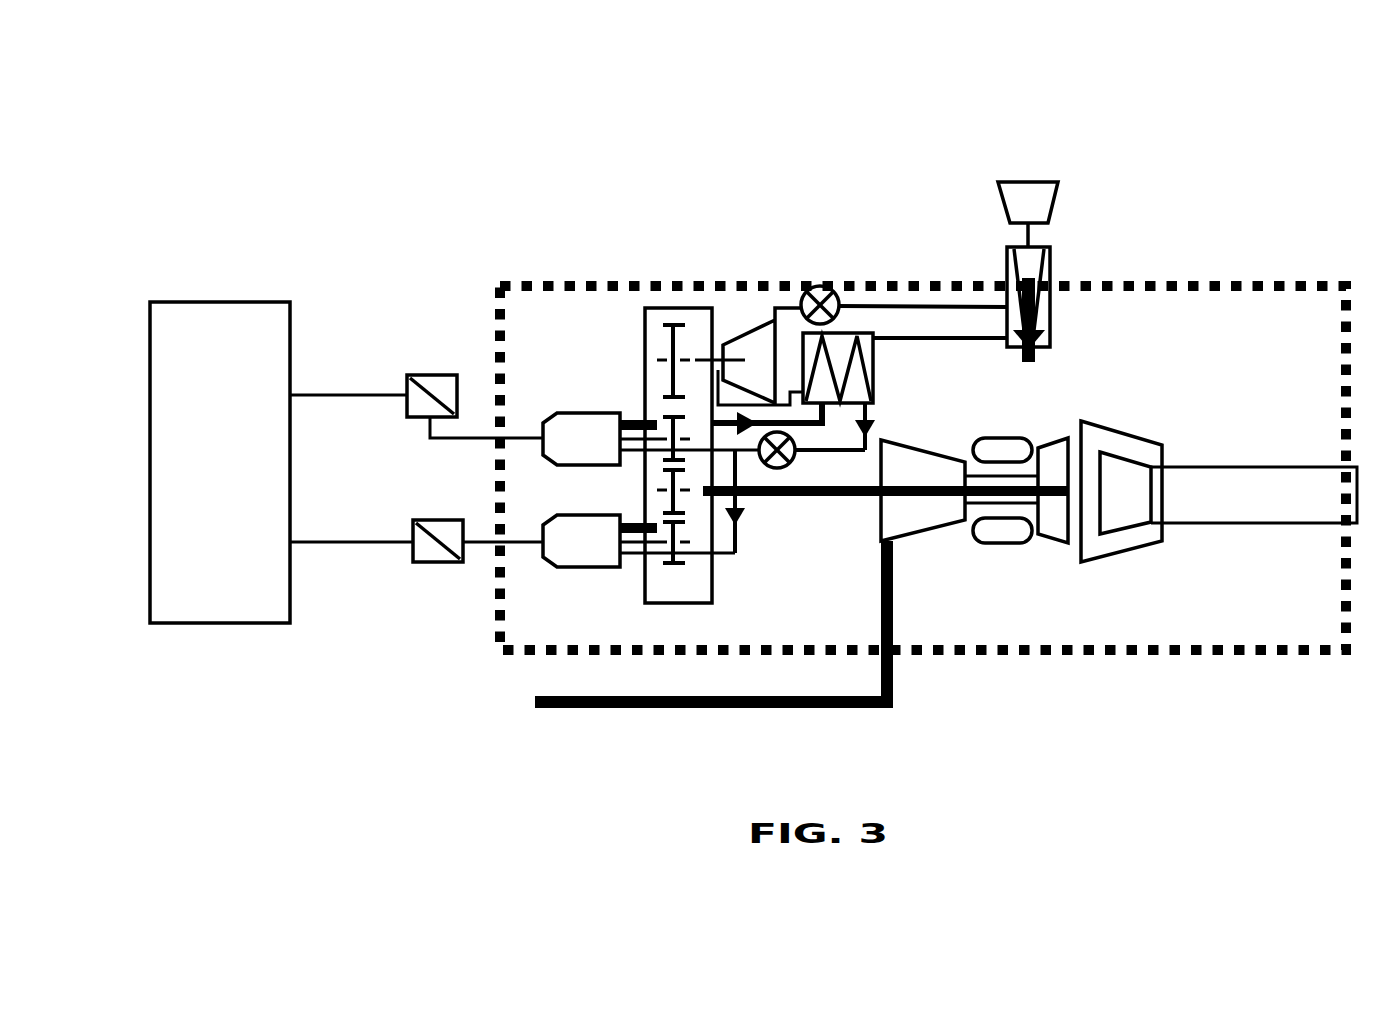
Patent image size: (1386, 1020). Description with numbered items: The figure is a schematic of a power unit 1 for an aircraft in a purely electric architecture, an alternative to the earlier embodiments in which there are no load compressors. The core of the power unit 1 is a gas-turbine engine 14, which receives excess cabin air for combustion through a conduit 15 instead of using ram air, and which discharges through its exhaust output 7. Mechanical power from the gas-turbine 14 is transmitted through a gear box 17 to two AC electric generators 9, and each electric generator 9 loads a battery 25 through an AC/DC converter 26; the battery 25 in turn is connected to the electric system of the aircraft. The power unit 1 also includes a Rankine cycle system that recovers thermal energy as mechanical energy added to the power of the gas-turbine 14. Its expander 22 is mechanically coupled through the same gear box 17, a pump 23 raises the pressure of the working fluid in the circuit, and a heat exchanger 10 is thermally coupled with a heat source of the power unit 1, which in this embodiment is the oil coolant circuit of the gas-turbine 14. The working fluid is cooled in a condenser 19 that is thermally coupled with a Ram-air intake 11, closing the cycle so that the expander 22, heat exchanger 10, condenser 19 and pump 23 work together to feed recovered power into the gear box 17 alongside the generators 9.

The power unit 1 is at (1247, 259).
The exhaust output 7 is at (1258, 502).
The electric generator 9 is at (473, 703).
The heat exchanger 10 is at (865, 332).
The Ram-air intake 11 is at (1037, 202).
The gas-turbine engine 14 is at (1032, 573).
The conduit 15 is at (893, 682).
The gear box 17 is at (650, 342).
The condenser 19 is at (1052, 267).
The expander 22 is at (753, 337).
The pump 23 is at (829, 289).
The battery 25 is at (210, 348).
The AC/DC converter 26 is at (375, 642).